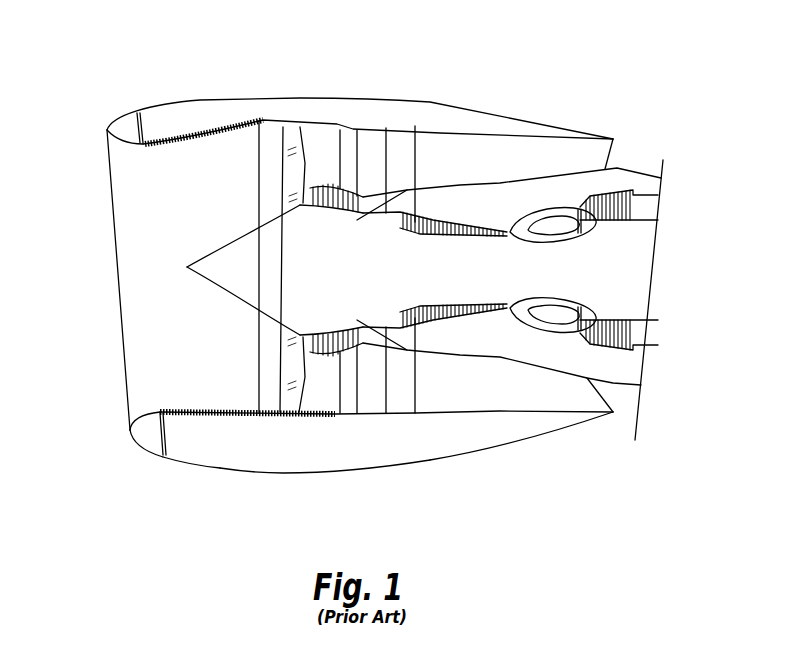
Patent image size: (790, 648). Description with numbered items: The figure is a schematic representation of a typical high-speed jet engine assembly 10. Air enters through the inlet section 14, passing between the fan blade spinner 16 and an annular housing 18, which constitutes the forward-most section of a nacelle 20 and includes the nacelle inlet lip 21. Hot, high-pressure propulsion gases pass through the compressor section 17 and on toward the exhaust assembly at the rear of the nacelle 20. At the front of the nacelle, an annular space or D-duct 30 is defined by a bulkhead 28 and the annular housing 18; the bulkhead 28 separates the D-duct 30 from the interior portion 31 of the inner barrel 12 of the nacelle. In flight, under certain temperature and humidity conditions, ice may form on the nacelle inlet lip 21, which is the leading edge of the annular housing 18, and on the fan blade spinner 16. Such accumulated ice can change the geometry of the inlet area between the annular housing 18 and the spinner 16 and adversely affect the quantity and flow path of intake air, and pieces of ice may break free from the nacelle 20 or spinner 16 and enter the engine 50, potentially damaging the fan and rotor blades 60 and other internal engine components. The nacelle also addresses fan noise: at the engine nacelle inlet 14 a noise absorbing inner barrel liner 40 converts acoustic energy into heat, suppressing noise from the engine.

The jet engine assembly 10 is at (148, 40).
The inner barrel 12 is at (195, 413).
The inlet section 14 is at (150, 290).
The fan blade spinner 16 is at (233, 250).
The compressor section 17 is at (470, 233).
The annular housing 18 is at (153, 144).
The nacelle 20 is at (290, 472).
The nacelle inlet lip 21 is at (132, 418).
The bulkhead 28 is at (167, 443).
The D-duct 30 is at (150, 437).
The interior portion 31 is at (403, 443).
The inner barrel liner 40 is at (203, 125).
The engine 50 is at (590, 380).
The fan and rotor blades 60 is at (324, 187).